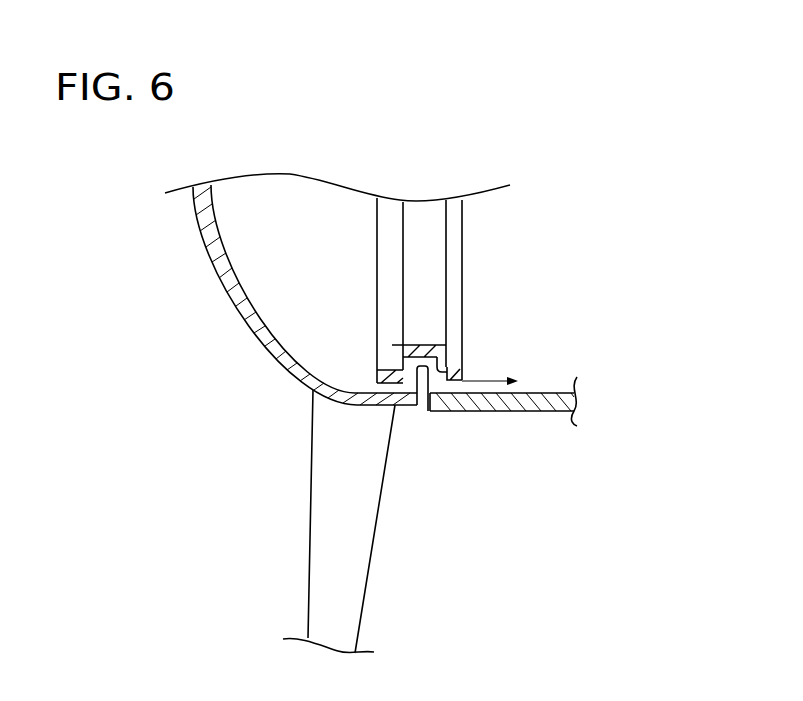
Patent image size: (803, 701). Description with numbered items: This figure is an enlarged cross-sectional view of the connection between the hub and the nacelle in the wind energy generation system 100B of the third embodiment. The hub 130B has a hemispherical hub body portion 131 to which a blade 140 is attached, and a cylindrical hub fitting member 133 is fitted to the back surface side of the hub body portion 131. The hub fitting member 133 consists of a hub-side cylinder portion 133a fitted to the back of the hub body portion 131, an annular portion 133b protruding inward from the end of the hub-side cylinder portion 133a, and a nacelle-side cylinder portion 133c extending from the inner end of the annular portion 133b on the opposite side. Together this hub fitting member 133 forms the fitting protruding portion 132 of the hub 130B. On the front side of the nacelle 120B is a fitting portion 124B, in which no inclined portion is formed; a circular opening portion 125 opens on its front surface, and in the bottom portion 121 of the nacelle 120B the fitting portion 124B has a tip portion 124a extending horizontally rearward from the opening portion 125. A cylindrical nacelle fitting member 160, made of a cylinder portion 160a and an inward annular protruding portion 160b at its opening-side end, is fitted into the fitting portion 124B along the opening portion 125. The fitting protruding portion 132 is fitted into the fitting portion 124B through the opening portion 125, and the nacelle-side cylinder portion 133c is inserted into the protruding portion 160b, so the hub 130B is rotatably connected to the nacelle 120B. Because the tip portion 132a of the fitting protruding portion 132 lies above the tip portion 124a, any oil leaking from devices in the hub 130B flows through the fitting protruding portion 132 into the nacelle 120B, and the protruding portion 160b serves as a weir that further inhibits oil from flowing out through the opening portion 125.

The wind energy generation system 100B is at (508, 75).
The nacelle 120B is at (542, 393).
The bottom portion 121 is at (553, 411).
The tip portion 124a is at (437, 412).
The fitting portion 124B is at (491, 419).
The opening portion 125 is at (415, 407).
The hub 130B is at (226, 310).
The hub body portion 131 is at (197, 245).
The fitting protruding portion 132 is at (462, 258).
The tip portion 132a is at (436, 370).
The hub fitting member 133 is at (400, 227).
The hub-side cylinder portion 133a is at (377, 372).
The annular portion 133b is at (393, 367).
The nacelle-side cylinder portion 133c is at (447, 223).
The blade 140 is at (313, 495).
The nacelle fitting member 160 is at (563, 301).
The cylinder portion 160a is at (460, 372).
The annular protruding portion 160b is at (450, 360).